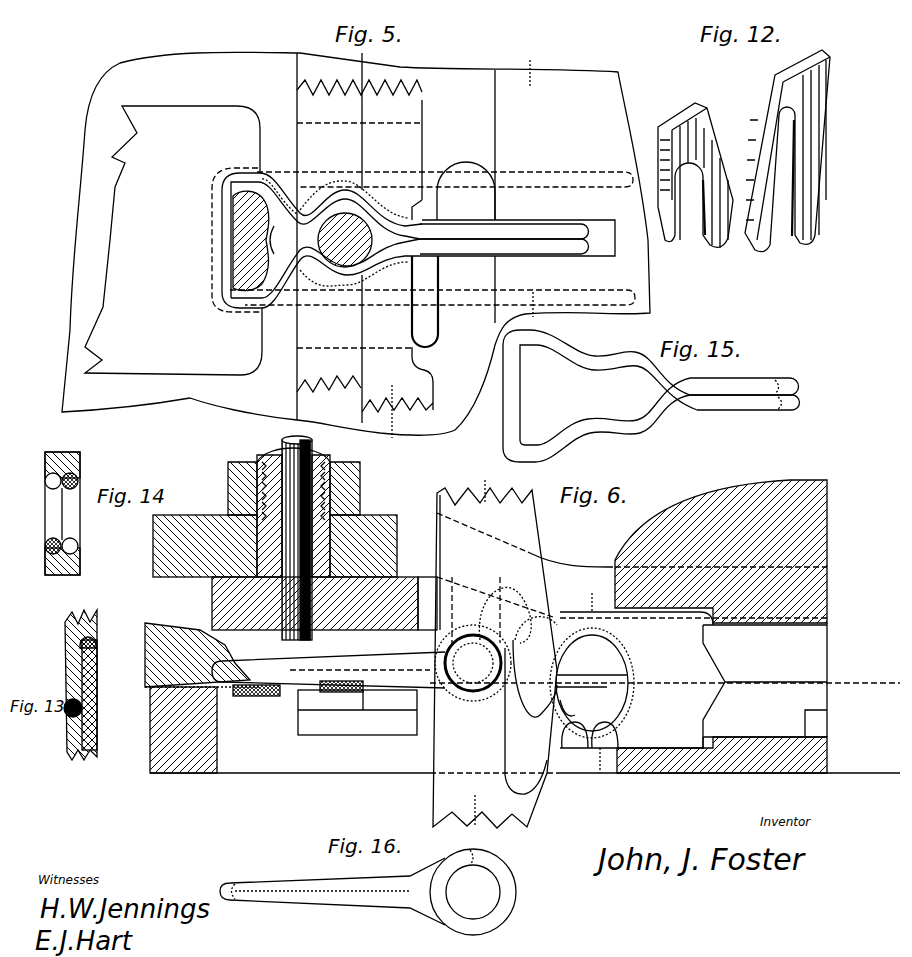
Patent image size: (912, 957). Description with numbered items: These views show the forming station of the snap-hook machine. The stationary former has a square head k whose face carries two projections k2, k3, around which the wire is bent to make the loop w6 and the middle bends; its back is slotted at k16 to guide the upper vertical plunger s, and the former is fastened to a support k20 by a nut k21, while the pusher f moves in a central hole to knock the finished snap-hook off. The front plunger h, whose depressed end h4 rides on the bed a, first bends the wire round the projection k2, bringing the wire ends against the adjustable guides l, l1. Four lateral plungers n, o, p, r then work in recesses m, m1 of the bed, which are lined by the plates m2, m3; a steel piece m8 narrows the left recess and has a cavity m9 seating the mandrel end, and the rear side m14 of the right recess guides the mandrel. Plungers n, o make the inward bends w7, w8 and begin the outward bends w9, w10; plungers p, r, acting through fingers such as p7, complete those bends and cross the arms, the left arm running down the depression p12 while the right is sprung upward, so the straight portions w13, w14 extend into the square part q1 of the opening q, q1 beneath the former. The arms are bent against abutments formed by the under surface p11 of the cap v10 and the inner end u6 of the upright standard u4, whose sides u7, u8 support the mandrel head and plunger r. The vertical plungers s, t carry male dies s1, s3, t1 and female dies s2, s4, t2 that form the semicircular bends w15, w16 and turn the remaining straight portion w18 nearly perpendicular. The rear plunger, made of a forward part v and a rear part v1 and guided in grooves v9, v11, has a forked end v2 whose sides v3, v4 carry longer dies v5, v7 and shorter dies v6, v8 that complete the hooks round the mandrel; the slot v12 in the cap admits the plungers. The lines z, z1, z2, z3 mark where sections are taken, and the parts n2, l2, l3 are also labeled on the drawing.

In FIG. 5, the bed a is at (356, 243).
In FIG. 6, the bed a is at (520, 737).
In FIG. 5, the front plunger h is at (173, 240).
In FIG. 6, the front plunger h is at (197, 655).
In FIG. 5, the recess m is at (359, 77).
In FIG. 5, the plate m2 is at (359, 122).
In FIG. 6, the plate m2 is at (364, 722).
In FIG. 5, the plate m3 is at (354, 350).
In FIG. 5, the steel piece m8 is at (432, 160).
In FIG. 5, the cavity m9 is at (461, 215).
In FIG. 5, the rear side of recess m14 is at (500, 300).
In FIG. 5, the recess m1 is at (380, 384).
In FIG. 5, the lateral plunger n is at (328, 147).
In FIG. 6, the lateral plunger n is at (316, 700).
In FIG. 5, the bar part n'' n2 is at (437, 160).
In FIG. 5, the lateral plunger o is at (326, 332).
In FIG. 5, the lateral plunger p is at (442, 181).
In FIG. 6, the lateral plunger p is at (391, 700).
In FIG. 5, the finger p7 is at (401, 238).
In FIG. 5, the under surface of cap p11 is at (432, 238).
In FIG. 6, the under surface of cap p11 is at (582, 672).
In FIG. 5, the depression p12 is at (501, 196).
In FIG. 5, the opening q is at (286, 240).
In FIG. 5, the square opening q1 is at (444, 229).
In FIG. 6, the square opening q1 is at (432, 755).
In FIG. 5, the lateral plunger r is at (383, 332).
In FIG. 5, the upright standard u4 is at (420, 301).
In FIG. 5, the inner end of standard u6 is at (425, 333).
In FIG. 5, the rear side of standard u7 is at (447, 302).
In FIG. 5, the front side of standard u8 is at (417, 325).
In FIG. 5, the loop w6 is at (226, 240).
In FIG. 15, the loop w6 is at (525, 396).
In FIG. 5, the inward bend w7 is at (301, 198).
In FIG. 15, the inward bend w7 is at (562, 350).
In FIG. 6, the inward bend w7 is at (536, 627).
In FIG. 5, the inward bend w8 is at (289, 277).
In FIG. 15, the inward bend w8 is at (564, 440).
In FIG. 5, the outward bend w9 is at (361, 210).
In FIG. 15, the outward bend w9 is at (646, 381).
In FIG. 5, the outward bend w10 is at (361, 262).
In FIG. 15, the outward bend w10 is at (639, 407).
In FIG. 5, the straight arm portion w13 is at (504, 229).
In FIG. 5, the straight arm portion w14 is at (504, 249).
In FIG. 15, the semicircular bend w15 is at (744, 386).
In FIG. 6, the semicircular bend w15 is at (437, 713).
In FIG. 6, the semicircular bend w16 is at (505, 615).
In FIG. 15, the straight portion w18 is at (745, 403).
In FIG. 6, the straight portion w18 is at (519, 760).
In FIG. 5, the section line z is at (391, 419).
In FIG. 5, the section line z1 is at (529, 189).
In FIG. 6, the section line z2 is at (479, 653).
In FIG. 6, the section line z3 is at (595, 686).
In FIG. 6, the former k is at (315, 542).
In FIG. 5, the projection k2 is at (251, 240).
In FIG. 6, the projection k2 is at (256, 701).
In FIG. 5, the projection k3 is at (345, 240).
In FIG. 6, the projection k3 is at (341, 695).
In FIG. 6, the slot k16 is at (430, 562).
In FIG. 6, the support k20 is at (275, 546).
In FIG. 6, the nut k21 is at (308, 481).
In FIG. 6, the pusher f is at (297, 538).
In FIG. 6, the depressed end of plunger h4 is at (202, 678).
In FIG. 13, the upper vertical plunger s is at (73, 685).
In FIG. 6, the upper vertical plunger s is at (523, 658).
In FIG. 12, the male die s1 is at (740, 151).
In FIG. 13, the male die s1 is at (53, 679).
In FIG. 12, the female die s2 is at (768, 185).
In FIG. 12, the male die s3 is at (739, 263).
In FIG. 6, the male die s3 is at (535, 678).
In FIG. 12, the female die s4 is at (687, 200).
In FIG. 13, the female die s4 is at (96, 631).
In FIG. 6, the female die s4 is at (476, 620).
In FIG. 13, the lower vertical plunger t is at (103, 735).
In FIG. 6, the lower vertical plunger t is at (470, 742).
In FIG. 13, the male die t1 is at (104, 655).
In FIG. 6, the male die t1 is at (467, 713).
In FIG. 13, the female die t2 is at (67, 716).
In FIG. 6, the female die t2 is at (535, 694).
In FIG. 6, the adjustable guide l is at (592, 690).
In FIG. 6, the adjustable guide l1 is at (473, 663).
In FIG. 6, the link arm l2 is at (526, 721).
In FIG. 6, the link hook l3 is at (567, 707).
In FIG. 6, the rear plunger v is at (592, 683).
In FIG. 6, the rear part of back plunger v1 is at (765, 685).
In FIG. 6, the forked inner end v2 is at (662, 662).
In FIG. 14, the side of opening v3 is at (37, 511).
In FIG. 14, the side of opening v4 is at (90, 511).
In FIG. 14, the longer die v5 is at (44, 546).
In FIG. 6, the longer die v5 is at (575, 735).
In FIG. 14, the shorter die v6 is at (45, 481).
In FIG. 14, the longer die v7 is at (79, 477).
In FIG. 6, the longer die v7 is at (693, 621).
In FIG. 14, the shorter die v8 is at (79, 546).
In FIG. 6, the shorter die v8 is at (631, 735).
In FIG. 6, the groove v9 is at (764, 740).
In FIG. 6, the cap v10 is at (721, 551).
In FIG. 6, the groove v11 is at (769, 605).
In FIG. 6, the slot v12 is at (584, 655).